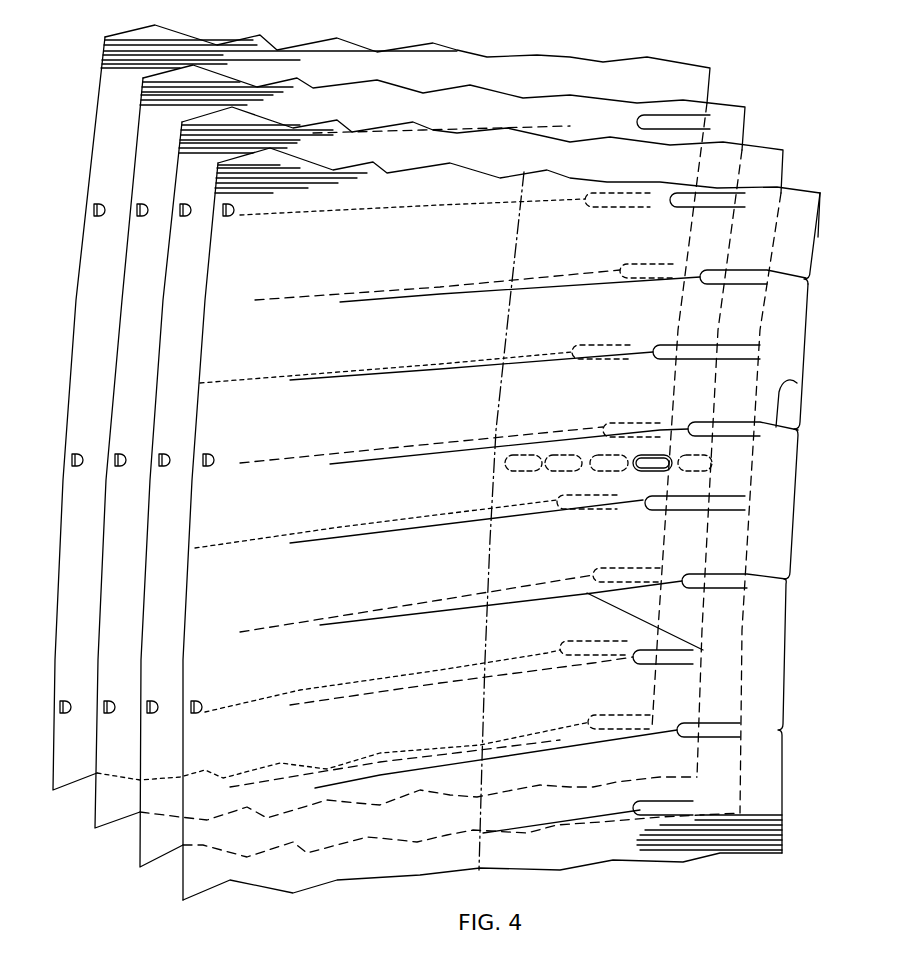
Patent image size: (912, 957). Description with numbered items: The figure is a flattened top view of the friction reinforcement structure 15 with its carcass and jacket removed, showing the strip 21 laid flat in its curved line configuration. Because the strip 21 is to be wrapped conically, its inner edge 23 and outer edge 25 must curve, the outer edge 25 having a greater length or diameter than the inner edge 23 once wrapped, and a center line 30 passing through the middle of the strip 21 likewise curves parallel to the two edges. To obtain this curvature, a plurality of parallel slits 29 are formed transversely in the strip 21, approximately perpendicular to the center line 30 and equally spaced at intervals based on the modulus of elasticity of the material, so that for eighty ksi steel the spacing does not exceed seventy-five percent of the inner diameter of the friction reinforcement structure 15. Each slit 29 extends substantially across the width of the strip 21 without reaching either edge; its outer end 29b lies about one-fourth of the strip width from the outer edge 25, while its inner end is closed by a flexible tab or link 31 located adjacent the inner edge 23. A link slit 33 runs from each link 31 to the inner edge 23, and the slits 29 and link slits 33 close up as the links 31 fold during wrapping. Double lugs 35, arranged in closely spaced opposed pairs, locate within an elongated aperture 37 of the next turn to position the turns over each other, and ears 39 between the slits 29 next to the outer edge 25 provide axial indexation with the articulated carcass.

The friction reinforcement structure 15 is at (828, 250).
The strip 21 is at (441, 524).
The inner edge 23 is at (806, 327).
The outer edge 25 is at (207, 258).
The slits 29 is at (705, 650).
The outer end of slit 29b is at (330, 630).
The center line 30 is at (516, 238).
The link 31 is at (707, 733).
The link slit 33 is at (797, 383).
The double lugs 35 is at (708, 472).
The elongated aperture 37 is at (648, 472).
The ears 39 is at (95, 207).